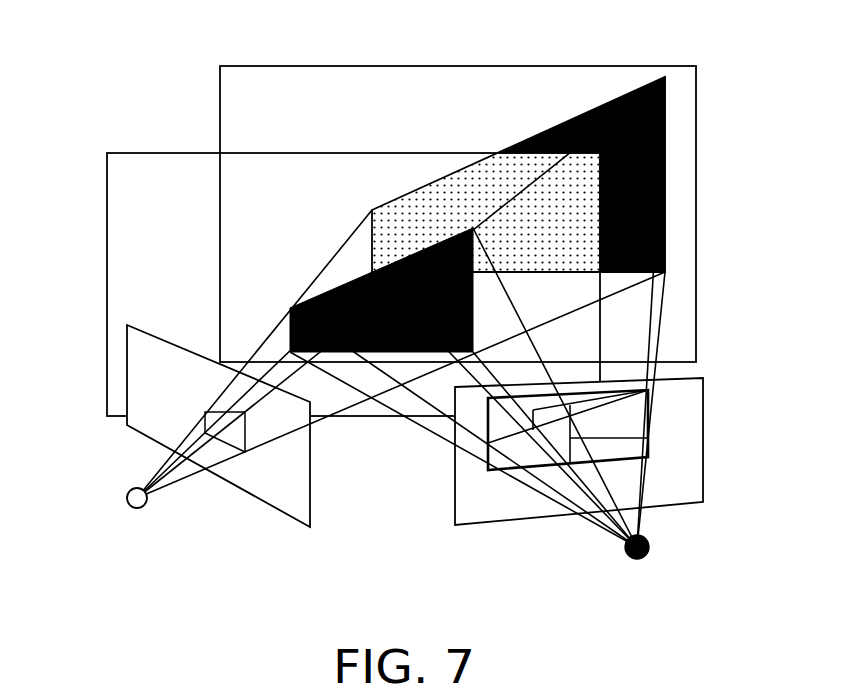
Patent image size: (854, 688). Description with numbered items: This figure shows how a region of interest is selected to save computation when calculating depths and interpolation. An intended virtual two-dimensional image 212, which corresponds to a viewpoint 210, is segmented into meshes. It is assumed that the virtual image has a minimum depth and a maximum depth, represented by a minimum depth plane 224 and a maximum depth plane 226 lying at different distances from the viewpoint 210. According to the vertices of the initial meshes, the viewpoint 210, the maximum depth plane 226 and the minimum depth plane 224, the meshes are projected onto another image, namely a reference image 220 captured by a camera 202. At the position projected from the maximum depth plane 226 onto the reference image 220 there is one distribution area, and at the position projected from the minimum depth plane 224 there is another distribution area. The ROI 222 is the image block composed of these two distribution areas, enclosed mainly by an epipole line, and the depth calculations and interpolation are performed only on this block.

The camera 202 is at (649, 545).
The viewpoint 210 is at (127, 495).
The virtual 2-D image 212 is at (267, 505).
The reference image 220 is at (705, 395).
The region of interest (ROI) 222 is at (647, 457).
The minimum depth plane 224 is at (145, 152).
The maximum depth plane 226 is at (697, 68).